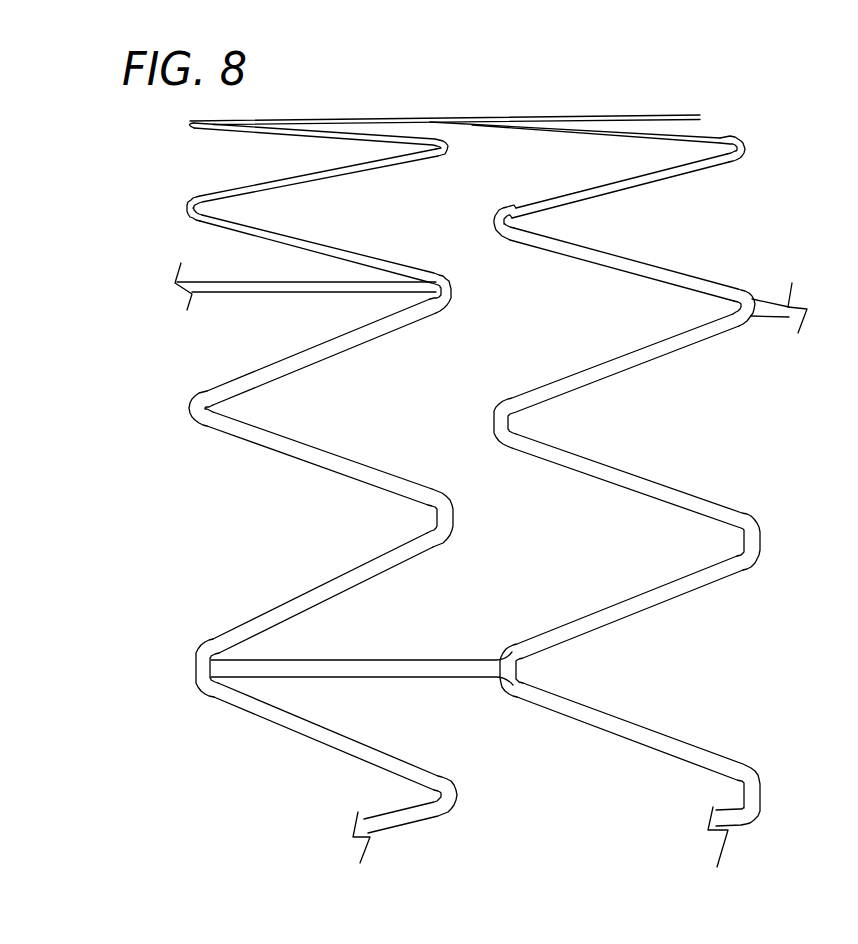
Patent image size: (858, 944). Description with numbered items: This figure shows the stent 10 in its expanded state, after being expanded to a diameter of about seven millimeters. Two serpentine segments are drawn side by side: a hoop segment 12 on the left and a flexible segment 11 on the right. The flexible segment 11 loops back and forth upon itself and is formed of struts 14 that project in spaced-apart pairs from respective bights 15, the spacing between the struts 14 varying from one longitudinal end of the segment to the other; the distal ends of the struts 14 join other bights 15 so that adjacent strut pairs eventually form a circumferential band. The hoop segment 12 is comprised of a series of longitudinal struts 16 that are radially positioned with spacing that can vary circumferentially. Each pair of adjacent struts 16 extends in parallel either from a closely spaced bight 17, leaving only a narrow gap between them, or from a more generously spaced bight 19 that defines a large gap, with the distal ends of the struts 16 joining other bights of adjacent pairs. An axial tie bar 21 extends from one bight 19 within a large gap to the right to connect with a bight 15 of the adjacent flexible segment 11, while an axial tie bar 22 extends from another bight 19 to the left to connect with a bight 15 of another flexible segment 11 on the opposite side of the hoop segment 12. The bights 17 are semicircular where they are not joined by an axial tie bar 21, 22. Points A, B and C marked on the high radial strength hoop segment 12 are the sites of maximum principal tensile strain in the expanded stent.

The stent 10 is at (527, 788).
The flexible segment 11 is at (640, 98).
The hoop segment 12 is at (195, 690).
The strut 14 is at (612, 363).
The bight 15 is at (494, 220).
The longitudinal strut 16 is at (322, 352).
The bight 17 is at (448, 148).
The bight 19 is at (448, 290).
The axial tie bar 21 is at (410, 672).
The axial tie bar 22 is at (247, 290).
The point A is at (458, 518).
The point B is at (200, 427).
The point C is at (424, 483).